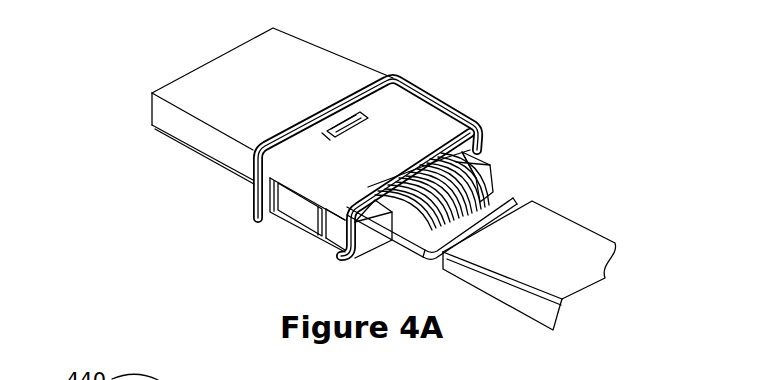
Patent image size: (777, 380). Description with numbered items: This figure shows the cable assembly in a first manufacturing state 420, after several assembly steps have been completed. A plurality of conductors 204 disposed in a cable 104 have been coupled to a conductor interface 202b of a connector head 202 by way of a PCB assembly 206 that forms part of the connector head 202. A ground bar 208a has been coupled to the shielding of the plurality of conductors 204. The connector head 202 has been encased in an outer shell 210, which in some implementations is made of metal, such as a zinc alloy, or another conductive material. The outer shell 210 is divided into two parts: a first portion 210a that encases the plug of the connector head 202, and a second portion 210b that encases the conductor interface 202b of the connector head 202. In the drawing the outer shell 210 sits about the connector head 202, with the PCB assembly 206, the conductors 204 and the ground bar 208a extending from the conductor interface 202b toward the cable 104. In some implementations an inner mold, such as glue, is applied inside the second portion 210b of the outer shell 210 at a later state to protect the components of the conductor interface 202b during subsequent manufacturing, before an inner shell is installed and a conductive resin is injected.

The manufacturing state 420 is at (175, 52).
The outer shell 210 is at (152, 121).
The first portion of the outer shell 210a is at (240, 221).
The second portion of the outer shell 210b is at (340, 277).
The connector head 202 is at (395, 82).
The conductor interface 202b is at (575, 133).
The PCB assembly 206 is at (470, 133).
The conductors 204 is at (484, 162).
The ground bar 208a is at (500, 198).
The cable 104 is at (612, 262).